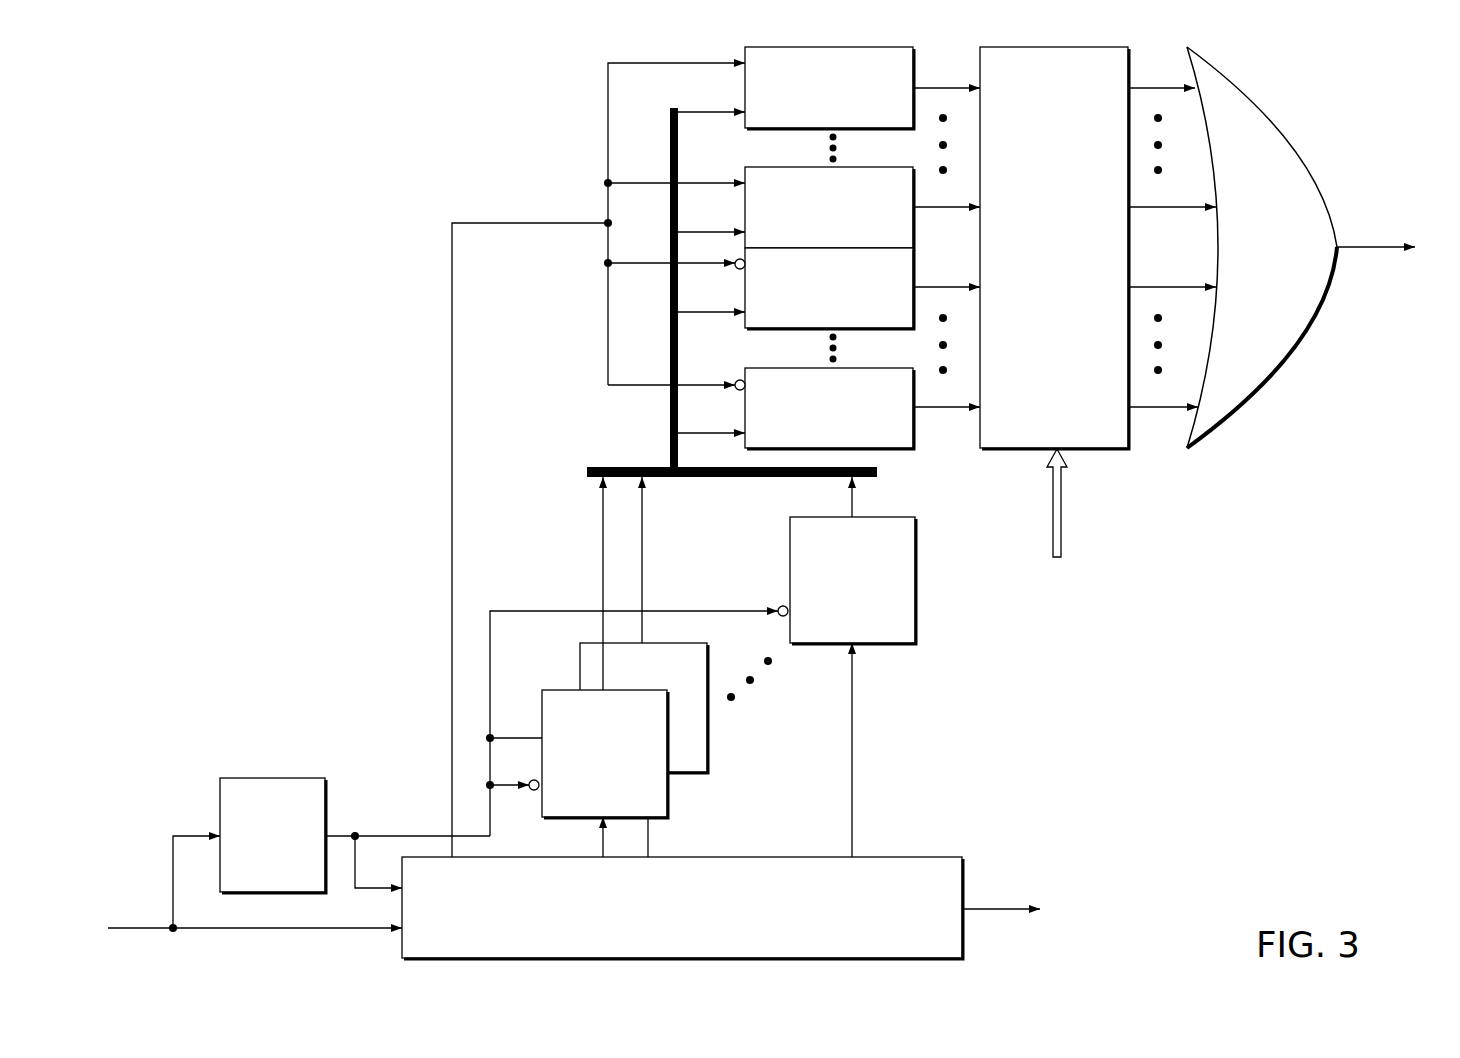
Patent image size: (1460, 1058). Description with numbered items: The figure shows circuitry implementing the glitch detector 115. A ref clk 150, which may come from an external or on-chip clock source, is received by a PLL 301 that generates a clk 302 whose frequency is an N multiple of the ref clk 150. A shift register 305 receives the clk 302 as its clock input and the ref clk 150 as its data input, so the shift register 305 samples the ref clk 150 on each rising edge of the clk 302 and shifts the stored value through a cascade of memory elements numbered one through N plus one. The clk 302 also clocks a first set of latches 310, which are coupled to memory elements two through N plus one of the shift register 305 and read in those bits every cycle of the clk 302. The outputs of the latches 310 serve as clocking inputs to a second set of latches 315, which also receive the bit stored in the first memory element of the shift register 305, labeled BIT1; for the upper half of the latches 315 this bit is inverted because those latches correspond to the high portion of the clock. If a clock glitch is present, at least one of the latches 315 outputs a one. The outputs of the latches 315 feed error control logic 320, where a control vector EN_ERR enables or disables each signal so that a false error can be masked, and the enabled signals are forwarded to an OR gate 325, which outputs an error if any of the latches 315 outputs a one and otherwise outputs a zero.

The glitch detector 115 is at (277, 168).
The second set of latches 315 is at (635, 157).
The first set of latches 310 is at (885, 697).
The error control logic 320 is at (1033, 272).
The OR gate 325 is at (1297, 155).
The PLL 301 is at (295, 862).
The clk 302 is at (407, 844).
The shift register 305 is at (600, 949).
The ref clk 150 is at (253, 944).